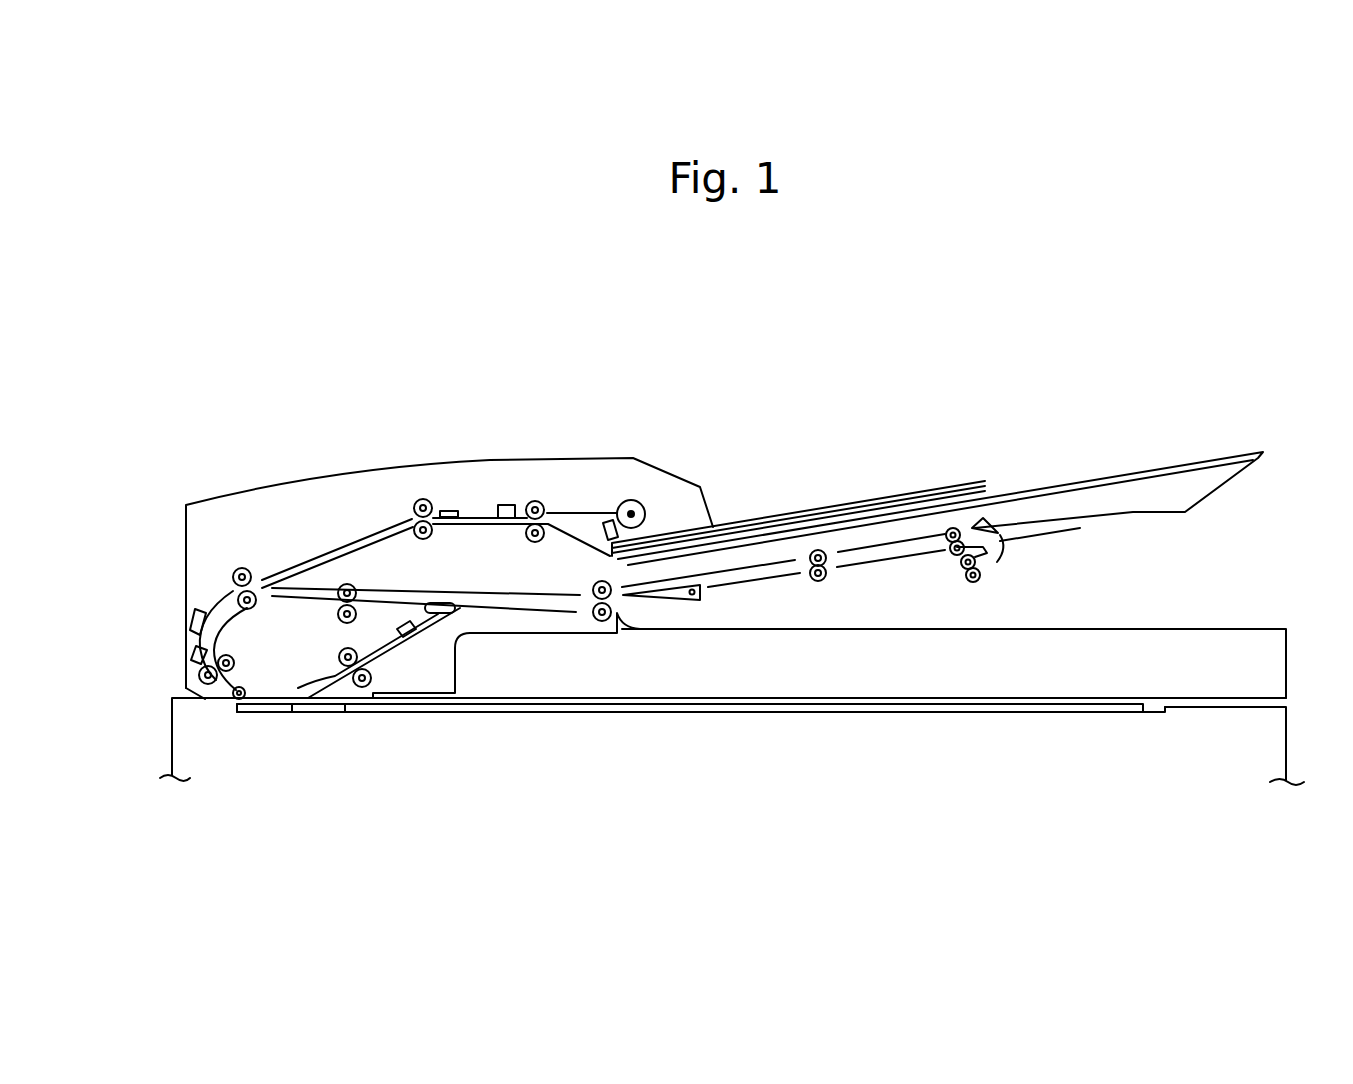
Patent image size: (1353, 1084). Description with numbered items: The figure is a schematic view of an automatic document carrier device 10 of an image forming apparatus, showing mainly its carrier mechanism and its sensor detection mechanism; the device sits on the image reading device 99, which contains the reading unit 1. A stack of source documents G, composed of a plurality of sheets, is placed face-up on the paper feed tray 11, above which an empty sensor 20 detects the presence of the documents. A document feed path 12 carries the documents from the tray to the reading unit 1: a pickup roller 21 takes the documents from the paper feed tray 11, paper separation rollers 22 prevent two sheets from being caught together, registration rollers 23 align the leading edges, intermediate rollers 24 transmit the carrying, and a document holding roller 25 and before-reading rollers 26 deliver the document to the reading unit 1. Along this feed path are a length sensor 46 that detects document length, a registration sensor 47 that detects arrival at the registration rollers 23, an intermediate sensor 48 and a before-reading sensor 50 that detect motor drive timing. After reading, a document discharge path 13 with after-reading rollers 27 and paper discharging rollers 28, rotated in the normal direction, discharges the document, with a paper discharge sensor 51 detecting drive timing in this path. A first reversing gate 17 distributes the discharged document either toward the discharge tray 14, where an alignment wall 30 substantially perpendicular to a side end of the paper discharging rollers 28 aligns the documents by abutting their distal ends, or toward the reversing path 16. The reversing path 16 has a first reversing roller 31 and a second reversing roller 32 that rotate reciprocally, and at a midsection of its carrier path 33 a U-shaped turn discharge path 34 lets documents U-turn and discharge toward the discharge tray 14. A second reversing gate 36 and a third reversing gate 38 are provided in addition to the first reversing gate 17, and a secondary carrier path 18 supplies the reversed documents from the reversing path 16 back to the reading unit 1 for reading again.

The automatic document carrier device 10 is at (767, 358).
The document feed path 12 is at (282, 505).
The image reading device 99 is at (1288, 750).
The reading unit 1 is at (262, 712).
The reversing path 16 is at (890, 620).
The discharge tray 14 is at (1116, 628).
The alignment wall 30 is at (617, 633).
The registration rollers 23 is at (420, 498).
The registration (RGT) sensor 47 is at (449, 506).
The length sensor 46 is at (505, 502).
The paper separation rollers 22 is at (536, 500).
The empty sensor 20 is at (610, 519).
The pickup roller 21 is at (638, 502).
The source documents G is at (820, 508).
The paper feed tray 11 is at (1070, 482).
The intermediate rollers 24 is at (234, 571).
The intermediate sensor 48 is at (192, 618).
The before-reading sensor 50 is at (192, 655).
The before-reading rollers 26 is at (199, 676).
The document holding roller 25 is at (245, 687).
The secondary carrier path 18 is at (496, 583).
The third reversing gate 38 is at (438, 604).
The paper discharge sensor 51 is at (442, 618).
The document discharge path 13 is at (410, 667).
The after-reading rollers 27 is at (361, 688).
The paper discharging rollers 28 is at (601, 622).
The first reversing gate 17 is at (686, 601).
The first reversing roller 31 is at (813, 583).
The carrier path 33 is at (866, 566).
The second reversing roller 32 is at (949, 556).
The turn discharge path 34 is at (1000, 565).
The second reversing gate 36 is at (1003, 532).